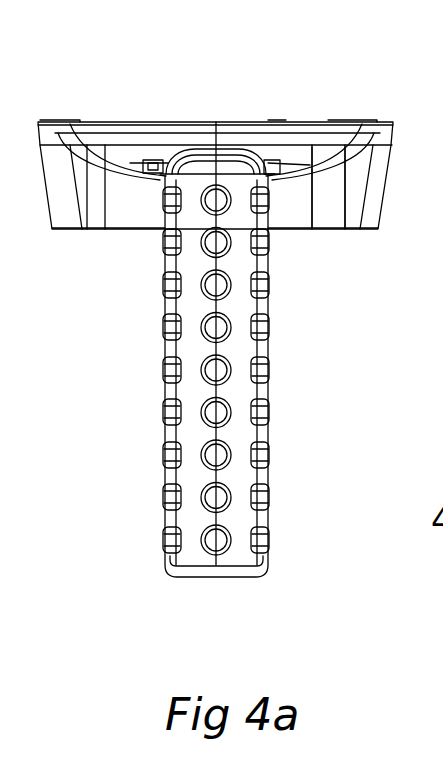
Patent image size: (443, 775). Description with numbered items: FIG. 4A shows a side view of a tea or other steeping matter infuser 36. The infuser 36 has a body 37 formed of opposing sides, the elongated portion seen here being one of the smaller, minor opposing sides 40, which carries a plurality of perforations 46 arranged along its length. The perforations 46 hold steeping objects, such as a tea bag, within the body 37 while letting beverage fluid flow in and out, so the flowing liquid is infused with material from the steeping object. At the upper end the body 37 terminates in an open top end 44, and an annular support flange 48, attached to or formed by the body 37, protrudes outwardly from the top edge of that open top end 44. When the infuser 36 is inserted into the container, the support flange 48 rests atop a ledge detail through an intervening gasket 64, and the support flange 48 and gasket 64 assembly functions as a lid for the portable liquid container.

The infuser 36 is at (165, 70).
The annular support flange 48 is at (392, 140).
The gasket 64 is at (290, 215).
The open top end 44 is at (170, 178).
The minor opposing sides 40 is at (240, 512).
The body 37 is at (170, 565).
The perforations 46 is at (212, 542).